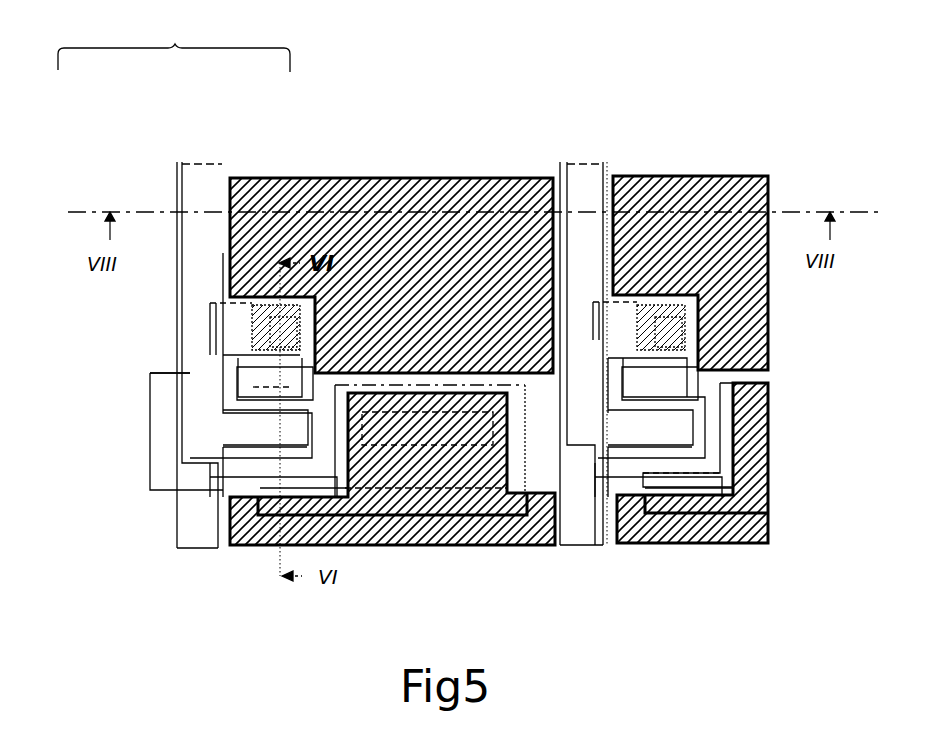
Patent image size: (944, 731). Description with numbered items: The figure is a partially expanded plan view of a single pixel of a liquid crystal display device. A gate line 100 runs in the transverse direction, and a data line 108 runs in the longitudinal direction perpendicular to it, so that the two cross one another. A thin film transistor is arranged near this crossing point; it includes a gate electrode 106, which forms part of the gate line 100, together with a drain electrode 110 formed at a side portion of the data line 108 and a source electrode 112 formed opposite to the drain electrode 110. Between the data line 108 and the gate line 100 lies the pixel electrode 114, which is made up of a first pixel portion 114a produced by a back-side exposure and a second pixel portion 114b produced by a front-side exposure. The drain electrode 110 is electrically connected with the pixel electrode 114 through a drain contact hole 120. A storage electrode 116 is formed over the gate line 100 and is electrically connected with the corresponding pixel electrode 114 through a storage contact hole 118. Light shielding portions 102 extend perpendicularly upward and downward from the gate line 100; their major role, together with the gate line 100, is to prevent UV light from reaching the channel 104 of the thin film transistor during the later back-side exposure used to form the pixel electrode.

The gate line 100 is at (147, 433).
The light shielding portions 102 is at (212, 316).
The channel 104 is at (307, 424).
The gate electrode 106 is at (187, 395).
The data line 108 is at (200, 168).
The drain electrode 110 is at (240, 442).
The source electrode 112 is at (252, 372).
The pixel electrode 114 is at (174, 41).
The first pixel portion 114a is at (230, 290).
The second pixel portion 114b is at (312, 177).
The storage electrode 116 is at (503, 490).
The storage contact hole 118 is at (428, 437).
The drain contact hole 120 is at (280, 300).